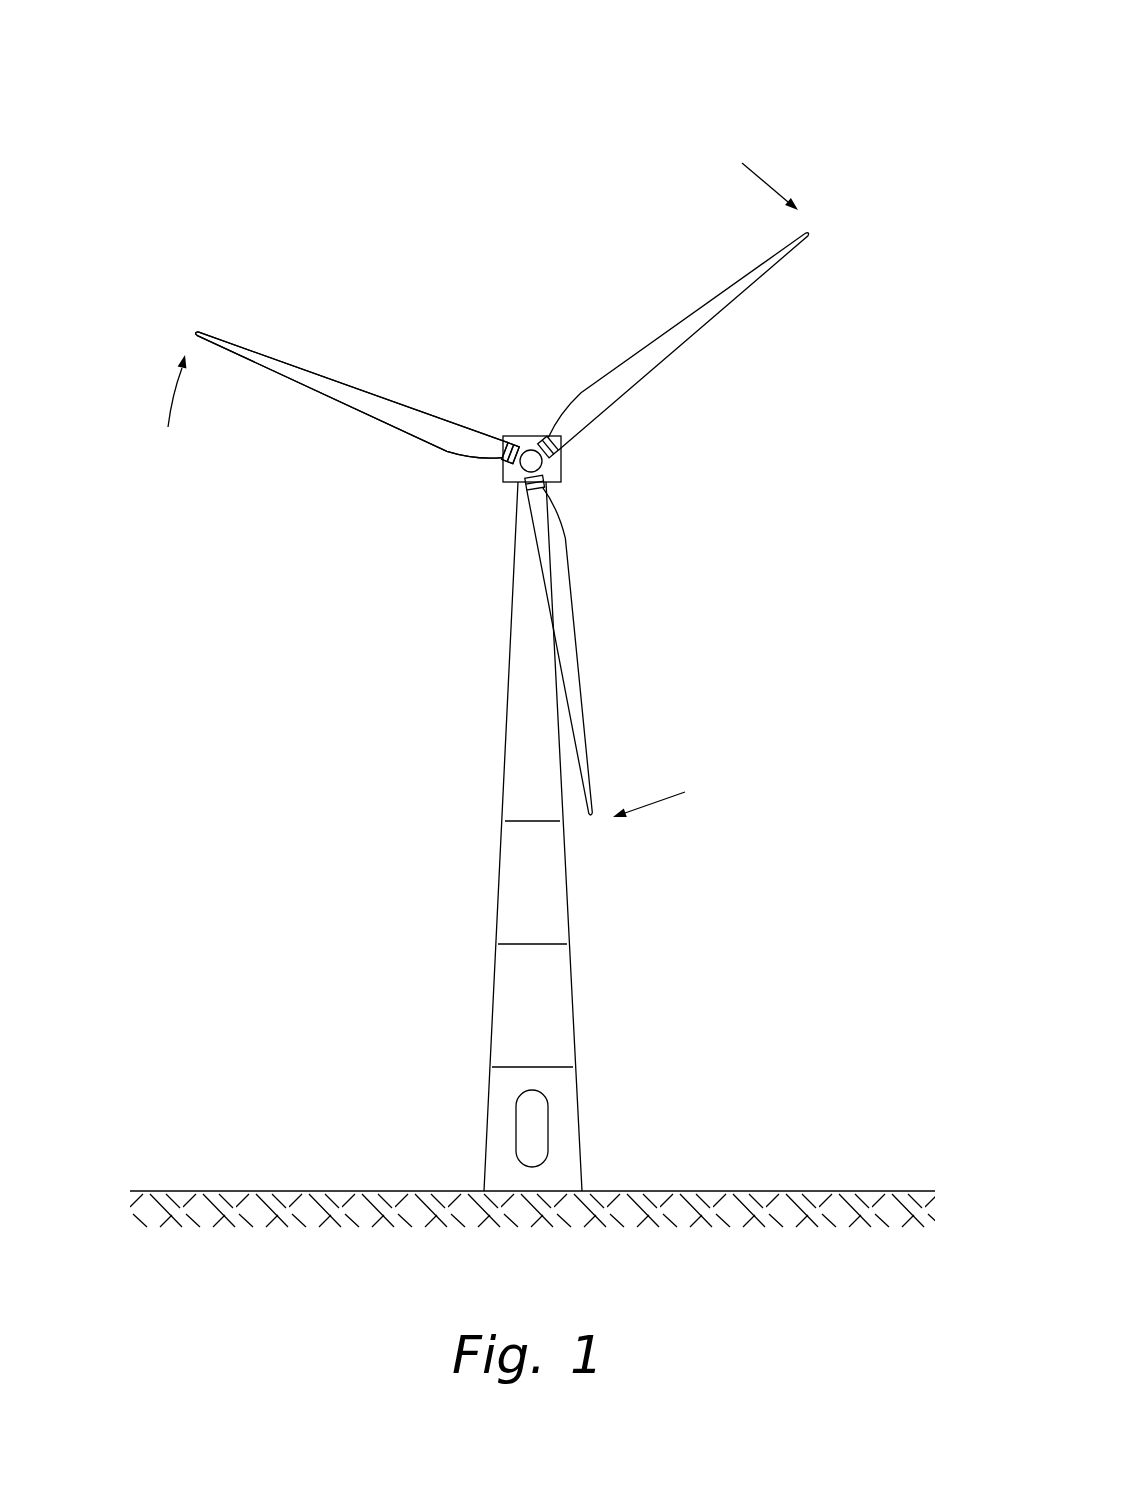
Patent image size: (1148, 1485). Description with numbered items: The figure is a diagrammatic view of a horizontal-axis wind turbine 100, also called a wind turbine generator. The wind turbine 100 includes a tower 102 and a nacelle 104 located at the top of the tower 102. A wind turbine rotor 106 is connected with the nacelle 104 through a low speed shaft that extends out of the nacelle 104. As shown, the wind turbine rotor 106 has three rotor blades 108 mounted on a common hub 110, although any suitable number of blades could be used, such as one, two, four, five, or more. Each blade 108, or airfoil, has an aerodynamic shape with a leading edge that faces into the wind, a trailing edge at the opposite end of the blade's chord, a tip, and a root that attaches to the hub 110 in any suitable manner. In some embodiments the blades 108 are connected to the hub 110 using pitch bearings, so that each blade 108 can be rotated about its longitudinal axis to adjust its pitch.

The horizontal-axis wind turbine 100 is at (186, 36).
The tower 102 is at (508, 888).
The nacelle 104 is at (512, 483).
The wind turbine rotor 106 is at (603, 473).
The rotor blade 108 is at (383, 403).
The hub 110 is at (531, 458).